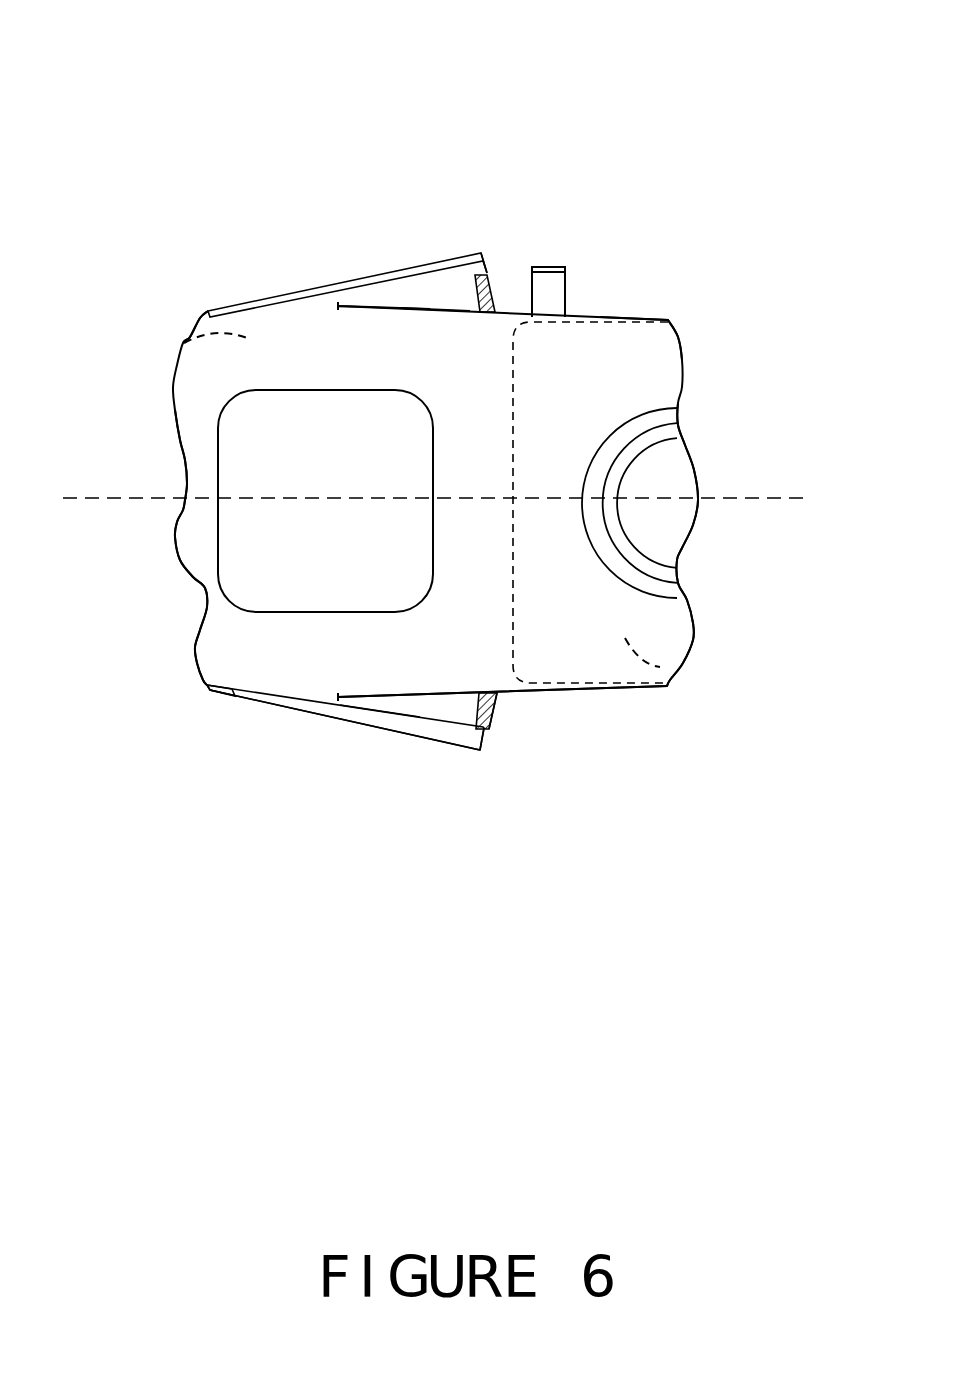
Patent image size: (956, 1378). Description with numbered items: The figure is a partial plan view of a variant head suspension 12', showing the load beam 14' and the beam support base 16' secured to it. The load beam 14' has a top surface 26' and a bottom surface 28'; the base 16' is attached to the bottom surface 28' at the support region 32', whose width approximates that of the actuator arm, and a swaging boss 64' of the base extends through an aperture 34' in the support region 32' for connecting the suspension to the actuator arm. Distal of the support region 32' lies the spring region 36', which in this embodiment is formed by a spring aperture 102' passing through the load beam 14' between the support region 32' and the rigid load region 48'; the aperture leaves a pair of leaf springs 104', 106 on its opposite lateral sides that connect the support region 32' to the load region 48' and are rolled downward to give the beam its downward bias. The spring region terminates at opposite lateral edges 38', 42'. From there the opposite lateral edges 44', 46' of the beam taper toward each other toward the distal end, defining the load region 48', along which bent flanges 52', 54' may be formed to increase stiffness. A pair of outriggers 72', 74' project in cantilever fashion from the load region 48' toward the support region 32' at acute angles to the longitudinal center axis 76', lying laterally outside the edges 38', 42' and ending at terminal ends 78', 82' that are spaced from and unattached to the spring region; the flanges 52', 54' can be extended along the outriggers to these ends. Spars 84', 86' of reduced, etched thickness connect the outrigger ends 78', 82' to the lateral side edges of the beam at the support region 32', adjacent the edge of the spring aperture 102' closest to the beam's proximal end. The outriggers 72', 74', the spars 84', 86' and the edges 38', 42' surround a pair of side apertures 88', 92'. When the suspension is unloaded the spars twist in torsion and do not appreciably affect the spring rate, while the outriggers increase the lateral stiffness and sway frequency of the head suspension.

The head suspension 12' is at (435, 350).
The load beam 14' is at (146, 664).
The beam support base 16' is at (703, 712).
The top surface 26' is at (264, 482).
The bottom surface 28' is at (170, 306).
The support region 32' is at (687, 315).
The aperture 34' is at (703, 475).
The spring region 36' is at (508, 704).
The lateral edge of spring region 38' is at (431, 205).
The lateral edge of spring region 42' is at (345, 811).
The lateral edge of load beam 44' is at (178, 738).
The lateral edge of load beam 46' is at (180, 267).
The rigid load region 48' is at (133, 573).
The bent flange 52' is at (325, 760).
The bent flange 54' is at (345, 237).
The swaging boss 64' is at (771, 513).
The outrigger 72' is at (442, 784).
The outrigger 74' is at (489, 190).
The longitudinal center axis 76' is at (132, 455).
The outrigger terminal end 78' is at (495, 778).
The outrigger terminal end 82' is at (525, 240).
The spar 84' is at (532, 772).
The spar 86' is at (559, 263).
The side aperture 88' is at (347, 782).
The side aperture 92' is at (382, 222).
The spring aperture 102' is at (547, 331).
The leaf spring 104' is at (295, 771).
The leaf spring 106 is at (345, 335).